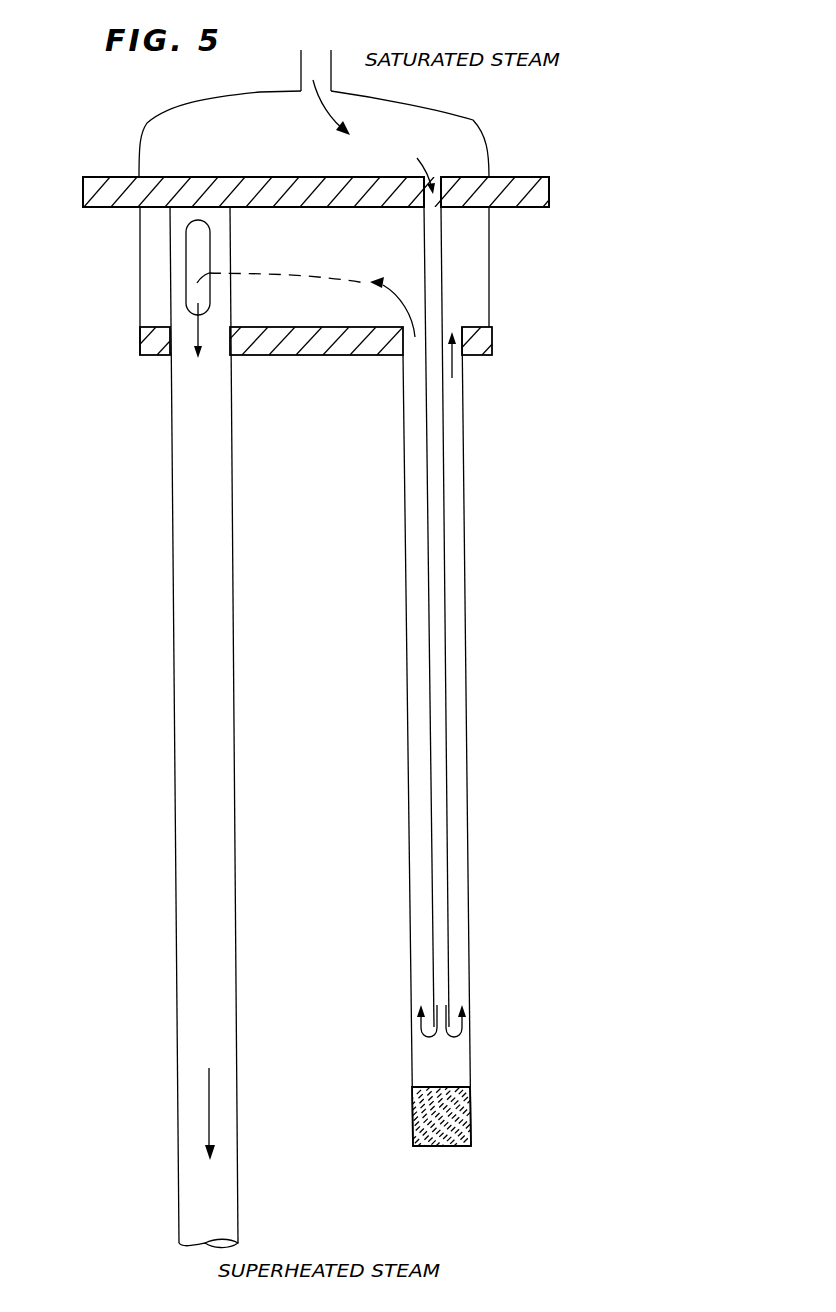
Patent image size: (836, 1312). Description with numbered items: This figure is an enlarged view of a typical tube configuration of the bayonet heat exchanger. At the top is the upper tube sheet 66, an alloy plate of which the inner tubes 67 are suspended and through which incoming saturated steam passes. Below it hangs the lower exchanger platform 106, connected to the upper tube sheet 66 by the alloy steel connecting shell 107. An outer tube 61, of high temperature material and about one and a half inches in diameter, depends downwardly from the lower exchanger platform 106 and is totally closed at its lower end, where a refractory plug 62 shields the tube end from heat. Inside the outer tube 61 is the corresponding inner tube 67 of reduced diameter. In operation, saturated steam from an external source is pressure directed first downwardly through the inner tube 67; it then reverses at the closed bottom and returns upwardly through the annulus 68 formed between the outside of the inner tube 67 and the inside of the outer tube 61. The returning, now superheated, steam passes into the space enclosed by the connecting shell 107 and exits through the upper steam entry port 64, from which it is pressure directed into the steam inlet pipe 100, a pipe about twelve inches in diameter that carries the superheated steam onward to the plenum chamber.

The upper tube sheet 66 is at (118, 190).
The upper steam entry port 64 is at (197, 247).
The connecting shell 107 is at (140, 294).
The lower exchanger platform 106 is at (160, 345).
The steam inlet pipe 100 is at (174, 597).
The inner tube 67 is at (442, 287).
The outer tube 61 is at (465, 600).
The annulus 68 is at (458, 828).
The refractory plug 62 is at (450, 1120).